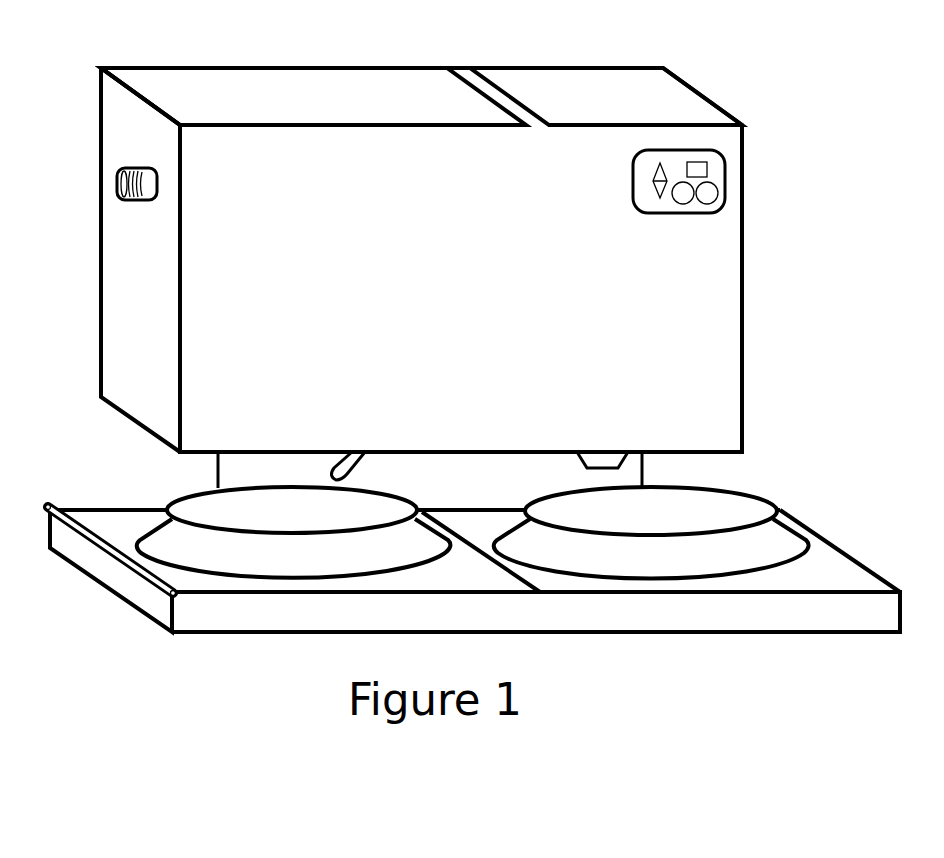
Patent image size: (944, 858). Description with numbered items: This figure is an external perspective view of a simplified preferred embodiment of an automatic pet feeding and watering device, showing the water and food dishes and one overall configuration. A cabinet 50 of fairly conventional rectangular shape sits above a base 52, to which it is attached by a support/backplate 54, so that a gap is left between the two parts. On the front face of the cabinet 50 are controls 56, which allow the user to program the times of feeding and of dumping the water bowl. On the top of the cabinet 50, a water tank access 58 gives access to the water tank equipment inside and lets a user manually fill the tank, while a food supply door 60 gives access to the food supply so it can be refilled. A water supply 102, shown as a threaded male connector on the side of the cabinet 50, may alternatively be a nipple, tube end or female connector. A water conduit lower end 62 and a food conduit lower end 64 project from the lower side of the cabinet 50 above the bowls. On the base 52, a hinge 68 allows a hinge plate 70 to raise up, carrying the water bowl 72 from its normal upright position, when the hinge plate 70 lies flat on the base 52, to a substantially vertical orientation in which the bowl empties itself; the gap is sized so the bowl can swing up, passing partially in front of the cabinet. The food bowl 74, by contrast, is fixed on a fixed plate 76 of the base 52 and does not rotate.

The cabinet 50 is at (687, 285).
The base 52 is at (620, 612).
The support/backplate 54 is at (232, 467).
The controls 56 is at (717, 177).
The water tank access 58 is at (396, 83).
The food supply door 60 is at (600, 87).
The water conduit lower end 62 is at (360, 458).
The food conduit lower end 64 is at (610, 457).
The hinge 68 is at (67, 513).
The hinge plate 70 is at (264, 611).
The water bowl 72 is at (312, 559).
The food bowl 74 is at (682, 552).
The fixed plate 76 is at (671, 605).
The water supply 102 is at (117, 187).